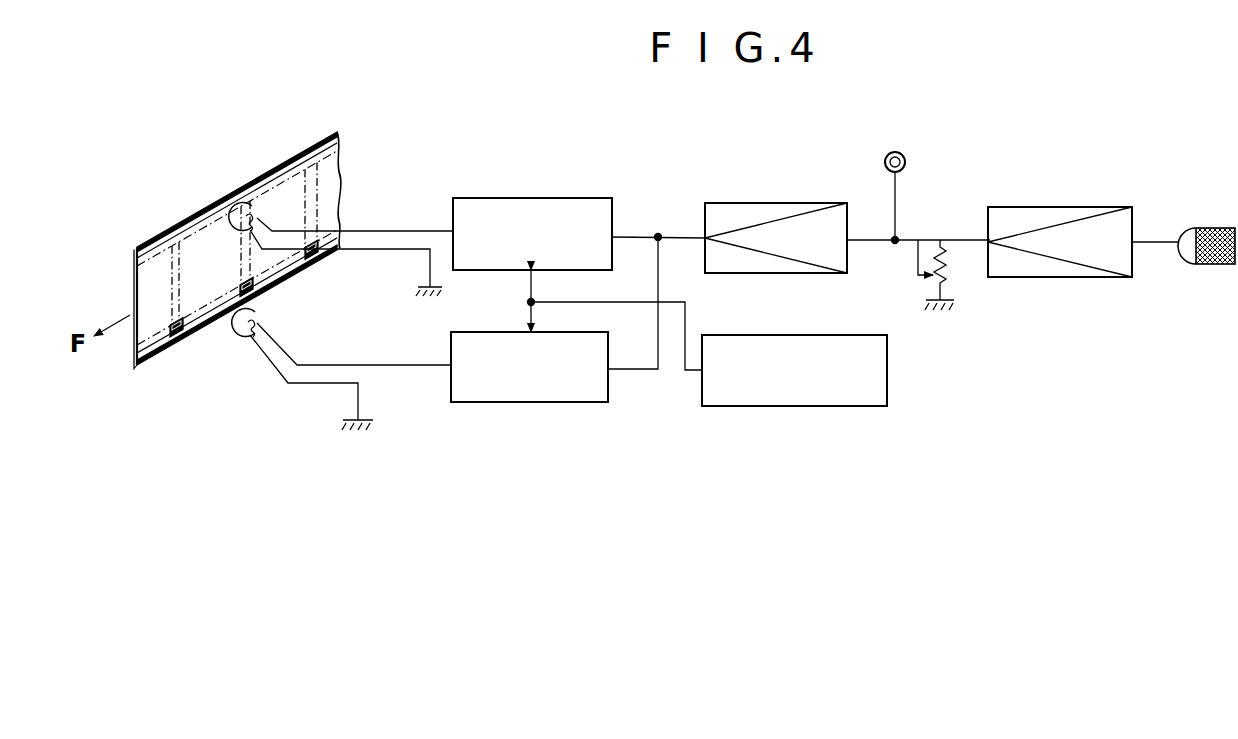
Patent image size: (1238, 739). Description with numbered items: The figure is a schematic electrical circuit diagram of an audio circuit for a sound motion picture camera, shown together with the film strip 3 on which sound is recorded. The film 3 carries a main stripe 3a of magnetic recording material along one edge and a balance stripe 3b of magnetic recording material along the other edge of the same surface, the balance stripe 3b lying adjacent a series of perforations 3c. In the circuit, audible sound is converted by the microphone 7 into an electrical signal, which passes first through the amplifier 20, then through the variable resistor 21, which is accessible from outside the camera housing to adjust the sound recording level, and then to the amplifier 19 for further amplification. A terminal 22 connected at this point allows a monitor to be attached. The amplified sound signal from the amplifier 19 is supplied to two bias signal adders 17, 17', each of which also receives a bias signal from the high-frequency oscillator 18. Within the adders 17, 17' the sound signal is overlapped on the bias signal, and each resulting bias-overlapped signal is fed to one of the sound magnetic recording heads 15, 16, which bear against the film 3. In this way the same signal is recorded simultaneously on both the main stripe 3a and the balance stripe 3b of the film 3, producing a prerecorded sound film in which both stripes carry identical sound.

The film strip 3 is at (330, 200).
The main stripe 3a is at (308, 149).
The balance stripe 3b is at (163, 342).
The perforations 3c is at (180, 330).
The sound magnetic recording head 15 is at (240, 203).
The sound magnetic recording head 16 is at (237, 332).
The bias signal adder 17 is at (533, 213).
The bias signal adder 17' is at (531, 395).
The high-frequency oscillator 18 is at (862, 406).
The amplifier 19 is at (823, 203).
The amplifier 20 is at (1050, 207).
The variable resistor 21 is at (948, 272).
The terminal 22 is at (904, 156).
The microphone 7 is at (1225, 228).